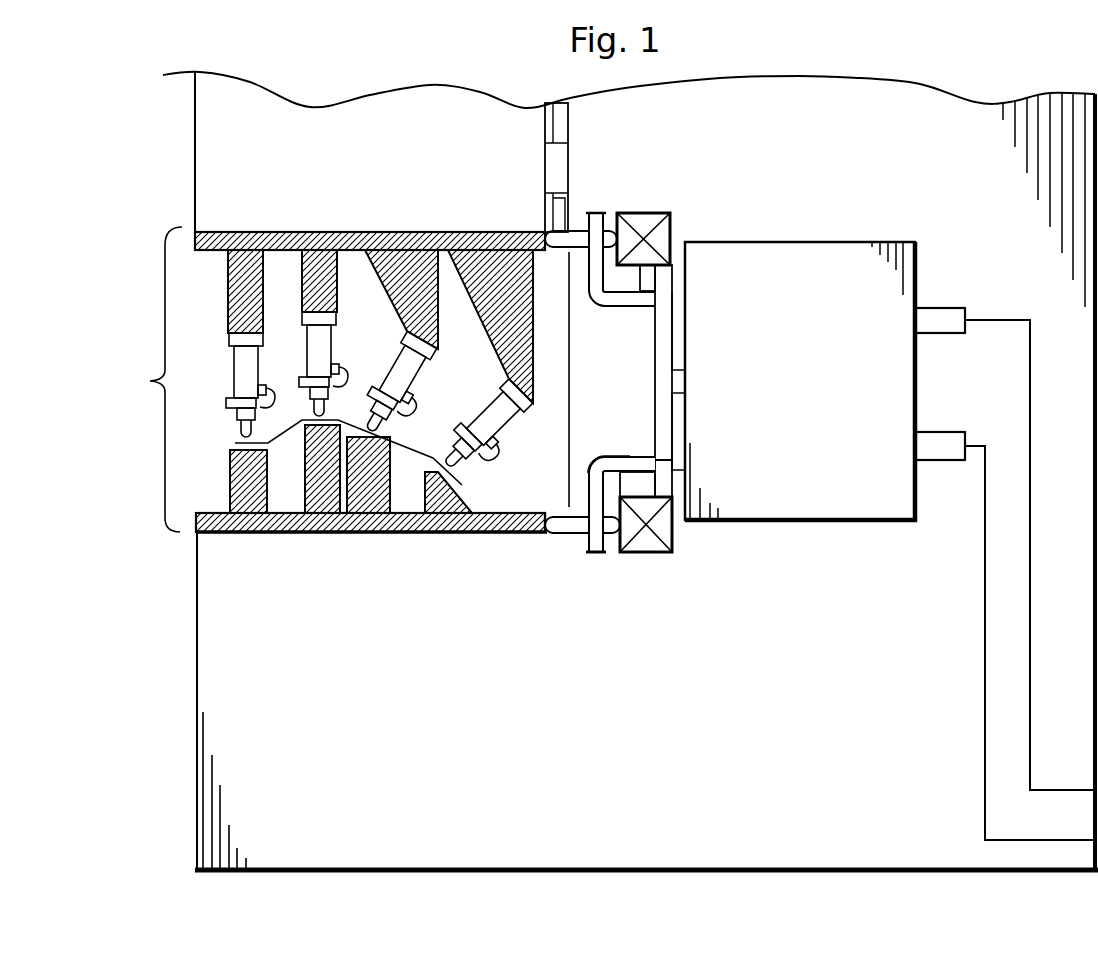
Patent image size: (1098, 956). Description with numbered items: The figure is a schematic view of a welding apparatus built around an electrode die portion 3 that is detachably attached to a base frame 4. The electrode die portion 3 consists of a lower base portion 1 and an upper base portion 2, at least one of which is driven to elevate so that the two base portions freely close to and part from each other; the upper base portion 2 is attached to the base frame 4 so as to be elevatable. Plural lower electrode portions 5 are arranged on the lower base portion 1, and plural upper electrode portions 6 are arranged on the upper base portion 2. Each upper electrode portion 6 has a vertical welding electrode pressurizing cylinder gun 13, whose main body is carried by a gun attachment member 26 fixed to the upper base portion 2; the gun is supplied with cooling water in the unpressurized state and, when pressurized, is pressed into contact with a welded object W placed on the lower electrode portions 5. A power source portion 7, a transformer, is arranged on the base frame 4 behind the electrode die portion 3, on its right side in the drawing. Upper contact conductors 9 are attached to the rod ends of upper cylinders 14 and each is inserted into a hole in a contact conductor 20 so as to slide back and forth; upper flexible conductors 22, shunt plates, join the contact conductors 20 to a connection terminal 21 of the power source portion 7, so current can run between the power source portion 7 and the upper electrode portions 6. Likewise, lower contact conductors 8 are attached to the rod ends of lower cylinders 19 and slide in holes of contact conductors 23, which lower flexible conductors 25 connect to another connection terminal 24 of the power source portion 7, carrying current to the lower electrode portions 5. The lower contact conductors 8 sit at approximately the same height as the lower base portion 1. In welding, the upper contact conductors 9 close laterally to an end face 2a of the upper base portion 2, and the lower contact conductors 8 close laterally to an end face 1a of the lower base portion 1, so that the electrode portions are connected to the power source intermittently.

The lower base portion 1 is at (265, 534).
The end face of the lower base portion 1a is at (552, 510).
The upper base portion 2 is at (236, 232).
The end face of the upper base portion 2a is at (549, 249).
The electrode die portion 3 is at (153, 379).
The base frame 4 is at (196, 708).
The lower electrode portions 5 is at (323, 497).
The upper electrode portions 6 is at (351, 264).
The power source portion 7 is at (810, 523).
The lower contact conductors 8 is at (560, 535).
The upper contact conductors 9 is at (547, 237).
The vertical welding electrode pressurizing cylinder gun 13 is at (318, 358).
The upper cylinders 14 is at (644, 213).
The lower cylinders 19 is at (641, 553).
The contact conductors 20 is at (603, 213).
The connection terminal 21 is at (676, 243).
The upper flexible conductors 22 is at (620, 262).
The contact conductors 23 is at (618, 508).
The connection terminal 24 is at (673, 527).
The lower flexible conductors 25 is at (612, 456).
The gun attachment member 26 is at (317, 294).
The welded object W is at (277, 443).